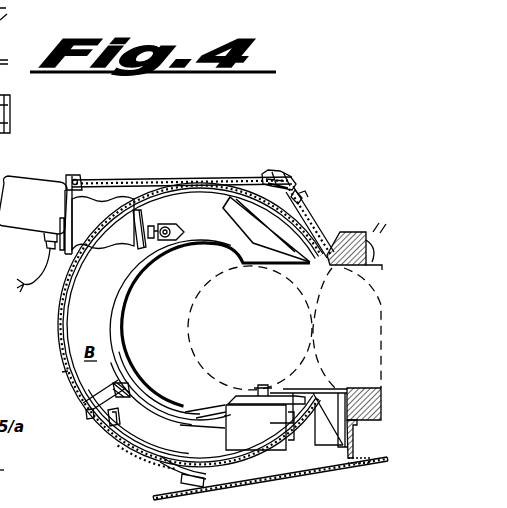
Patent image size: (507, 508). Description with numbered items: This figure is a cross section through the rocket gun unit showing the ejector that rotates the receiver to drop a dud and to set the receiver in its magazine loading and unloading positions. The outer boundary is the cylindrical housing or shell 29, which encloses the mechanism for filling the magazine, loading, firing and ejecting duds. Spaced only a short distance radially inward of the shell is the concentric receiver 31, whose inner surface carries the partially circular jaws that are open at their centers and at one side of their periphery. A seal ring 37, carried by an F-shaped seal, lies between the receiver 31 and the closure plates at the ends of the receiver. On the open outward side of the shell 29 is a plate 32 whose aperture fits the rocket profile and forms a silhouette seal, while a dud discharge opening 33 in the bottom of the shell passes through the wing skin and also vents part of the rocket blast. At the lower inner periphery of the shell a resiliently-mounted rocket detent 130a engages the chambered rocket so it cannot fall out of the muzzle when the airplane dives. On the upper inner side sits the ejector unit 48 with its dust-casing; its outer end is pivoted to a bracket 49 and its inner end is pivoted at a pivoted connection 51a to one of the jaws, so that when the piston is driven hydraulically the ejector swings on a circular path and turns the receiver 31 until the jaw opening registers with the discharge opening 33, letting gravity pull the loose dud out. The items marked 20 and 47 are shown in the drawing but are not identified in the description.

The camera body 20 is at (100, 506).
The cylindrical housing 29 is at (66, 371).
The receiver 31 is at (61, 338).
The plate 32 is at (325, 425).
The dud discharge opening 33 is at (314, 464).
The seal ring 37 is at (118, 316).
The bellows 47 is at (92, 206).
The ejector unit 48 is at (47, 180).
The bracket 49 is at (297, 203).
The pivoted connection 51a is at (170, 228).
The rocket detent 130a is at (264, 386).